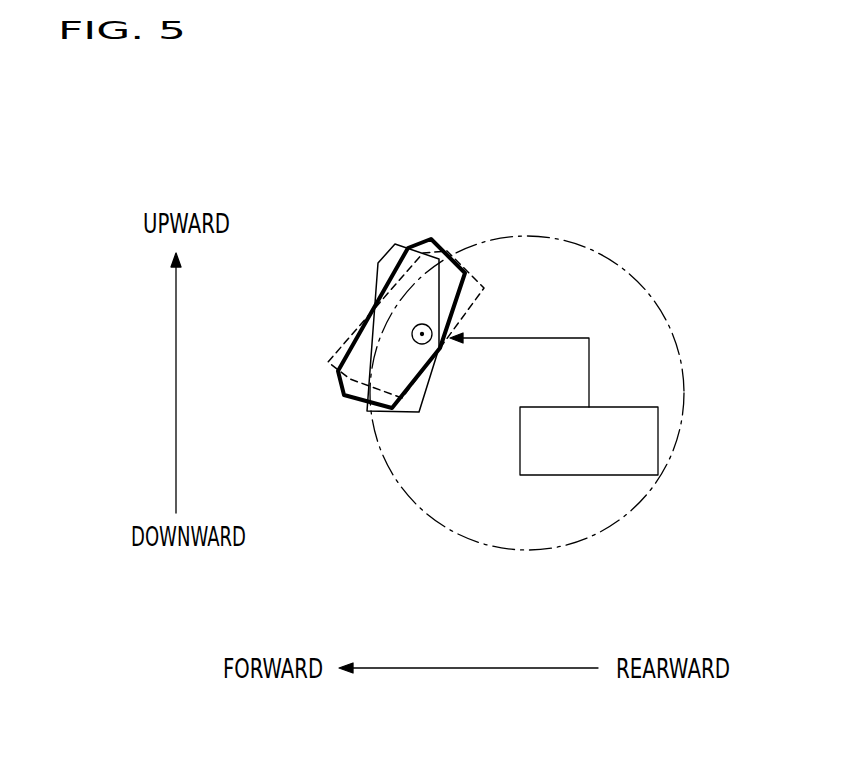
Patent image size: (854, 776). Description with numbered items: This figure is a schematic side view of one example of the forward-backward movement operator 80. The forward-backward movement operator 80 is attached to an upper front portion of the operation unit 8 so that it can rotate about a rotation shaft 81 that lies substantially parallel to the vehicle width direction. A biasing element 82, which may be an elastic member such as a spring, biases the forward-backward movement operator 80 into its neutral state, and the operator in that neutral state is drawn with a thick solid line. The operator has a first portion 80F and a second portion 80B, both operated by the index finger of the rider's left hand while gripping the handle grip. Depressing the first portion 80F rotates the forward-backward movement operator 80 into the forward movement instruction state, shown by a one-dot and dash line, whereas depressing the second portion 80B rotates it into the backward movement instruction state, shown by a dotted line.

The operation unit 8 is at (630, 269).
The forward-backward movement operator 80 is at (320, 183).
The second portion 80B is at (381, 273).
The first portion 80F is at (329, 359).
The rotation shaft 81 is at (431, 341).
The biasing element 82 is at (620, 399).